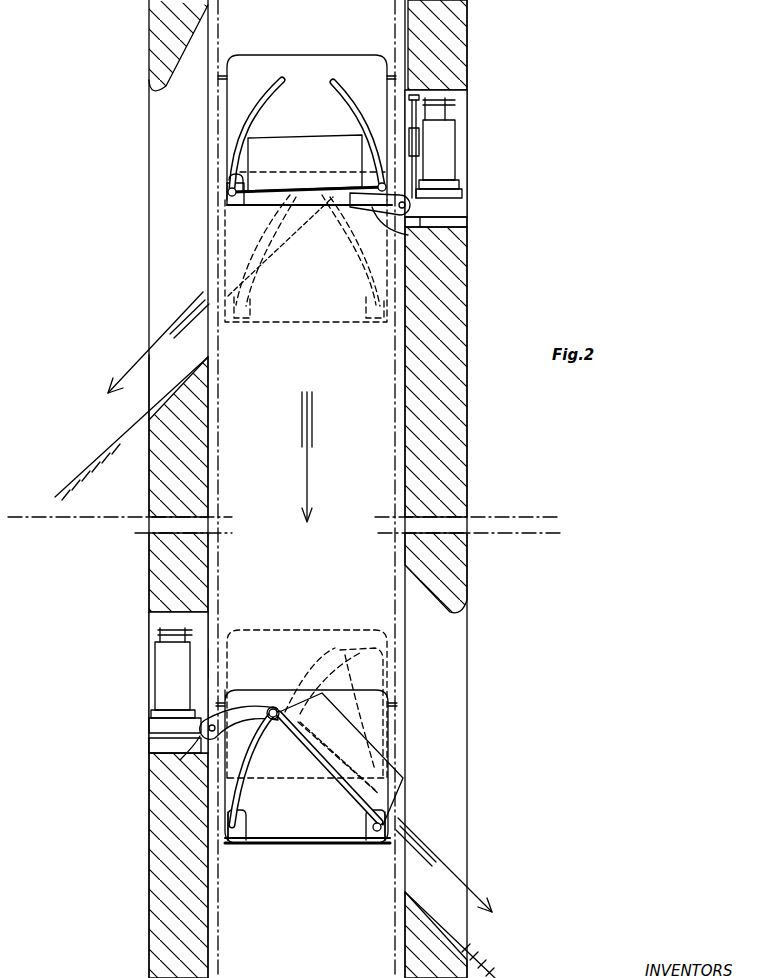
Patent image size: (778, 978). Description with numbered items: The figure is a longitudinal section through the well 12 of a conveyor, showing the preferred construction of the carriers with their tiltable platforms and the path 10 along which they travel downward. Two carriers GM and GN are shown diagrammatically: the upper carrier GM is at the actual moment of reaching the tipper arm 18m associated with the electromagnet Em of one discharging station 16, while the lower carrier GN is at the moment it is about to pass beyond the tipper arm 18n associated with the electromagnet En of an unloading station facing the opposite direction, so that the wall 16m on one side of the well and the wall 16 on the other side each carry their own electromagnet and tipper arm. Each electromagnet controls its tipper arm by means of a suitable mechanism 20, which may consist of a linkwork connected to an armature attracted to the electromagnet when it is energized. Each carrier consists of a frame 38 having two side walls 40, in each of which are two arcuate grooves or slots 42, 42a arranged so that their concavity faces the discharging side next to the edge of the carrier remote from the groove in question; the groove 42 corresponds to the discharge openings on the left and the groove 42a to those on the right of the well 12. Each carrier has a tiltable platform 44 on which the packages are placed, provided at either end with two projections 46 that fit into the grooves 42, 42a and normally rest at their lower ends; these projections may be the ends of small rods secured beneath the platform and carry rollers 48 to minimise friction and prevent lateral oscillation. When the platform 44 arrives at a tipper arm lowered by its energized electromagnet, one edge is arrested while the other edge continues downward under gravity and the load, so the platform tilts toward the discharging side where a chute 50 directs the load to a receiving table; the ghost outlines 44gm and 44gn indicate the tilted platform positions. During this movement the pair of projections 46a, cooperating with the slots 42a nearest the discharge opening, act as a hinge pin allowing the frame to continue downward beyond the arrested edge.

The conduit passage 10 is at (222, 420).
The well 12 is at (323, 457).
The discharging station 16 is at (466, 688).
The conduit wall at station m 16m is at (165, 258).
The tipper arm 18m is at (410, 230).
The tipper arm 18n is at (205, 738).
The mechanism 20 is at (418, 95).
The frame 38 is at (227, 203).
The side wall 40 is at (290, 57).
The arcuate groove 42 is at (348, 95).
The arcuate groove 42a is at (276, 90).
The tiltable platform 44 is at (340, 207).
The gate body ghost position m 44gm is at (300, 198).
The gate body ghost position n 44gn is at (318, 770).
The projection 46 is at (227, 845).
The projection 46a is at (231, 188).
The roller 48 is at (230, 192).
The chute 50 is at (76, 486).
The electromagnet Em is at (450, 140).
The electromagnet En is at (158, 672).
The carrier GM is at (294, 325).
The carrier GN is at (298, 648).